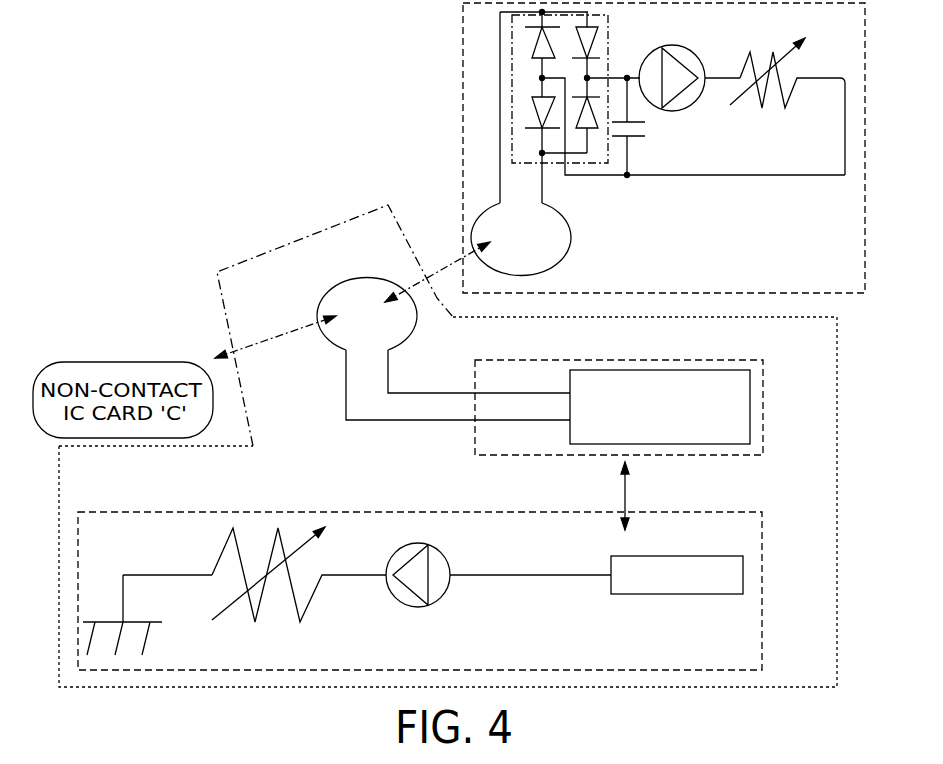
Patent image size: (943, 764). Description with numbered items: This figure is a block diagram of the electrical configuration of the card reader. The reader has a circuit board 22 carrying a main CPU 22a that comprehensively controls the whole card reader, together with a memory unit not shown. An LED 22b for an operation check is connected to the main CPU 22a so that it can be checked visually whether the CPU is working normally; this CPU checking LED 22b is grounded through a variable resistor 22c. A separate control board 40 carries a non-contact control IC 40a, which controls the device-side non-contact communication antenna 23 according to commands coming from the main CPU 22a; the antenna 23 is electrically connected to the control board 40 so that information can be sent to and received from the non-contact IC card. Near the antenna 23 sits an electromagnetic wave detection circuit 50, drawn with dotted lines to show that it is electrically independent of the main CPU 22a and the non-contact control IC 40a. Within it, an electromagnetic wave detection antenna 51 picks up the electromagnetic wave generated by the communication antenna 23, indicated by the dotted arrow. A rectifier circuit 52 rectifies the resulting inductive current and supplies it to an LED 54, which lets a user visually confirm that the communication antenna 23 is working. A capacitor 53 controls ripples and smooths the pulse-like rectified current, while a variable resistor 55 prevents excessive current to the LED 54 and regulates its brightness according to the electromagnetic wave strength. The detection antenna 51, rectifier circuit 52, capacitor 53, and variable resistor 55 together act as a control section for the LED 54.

The circuit board 22 is at (762, 610).
The main CPU 22a is at (653, 597).
The LED 22b is at (412, 610).
The variable resistor 22c is at (290, 618).
The device-side non-contact communication antenna 23 is at (346, 350).
The control board 40 is at (763, 420).
The non-contact control IC 40a is at (797, 353).
The electromagnetic wave detection circuit 50 is at (462, 115).
The electromagnetic wave detection antenna 51 is at (546, 250).
The rectifier circuit 52 is at (608, 165).
The capacitor 53 is at (643, 125).
The LED 54 is at (689, 48).
The variable resistor 55 is at (778, 112).